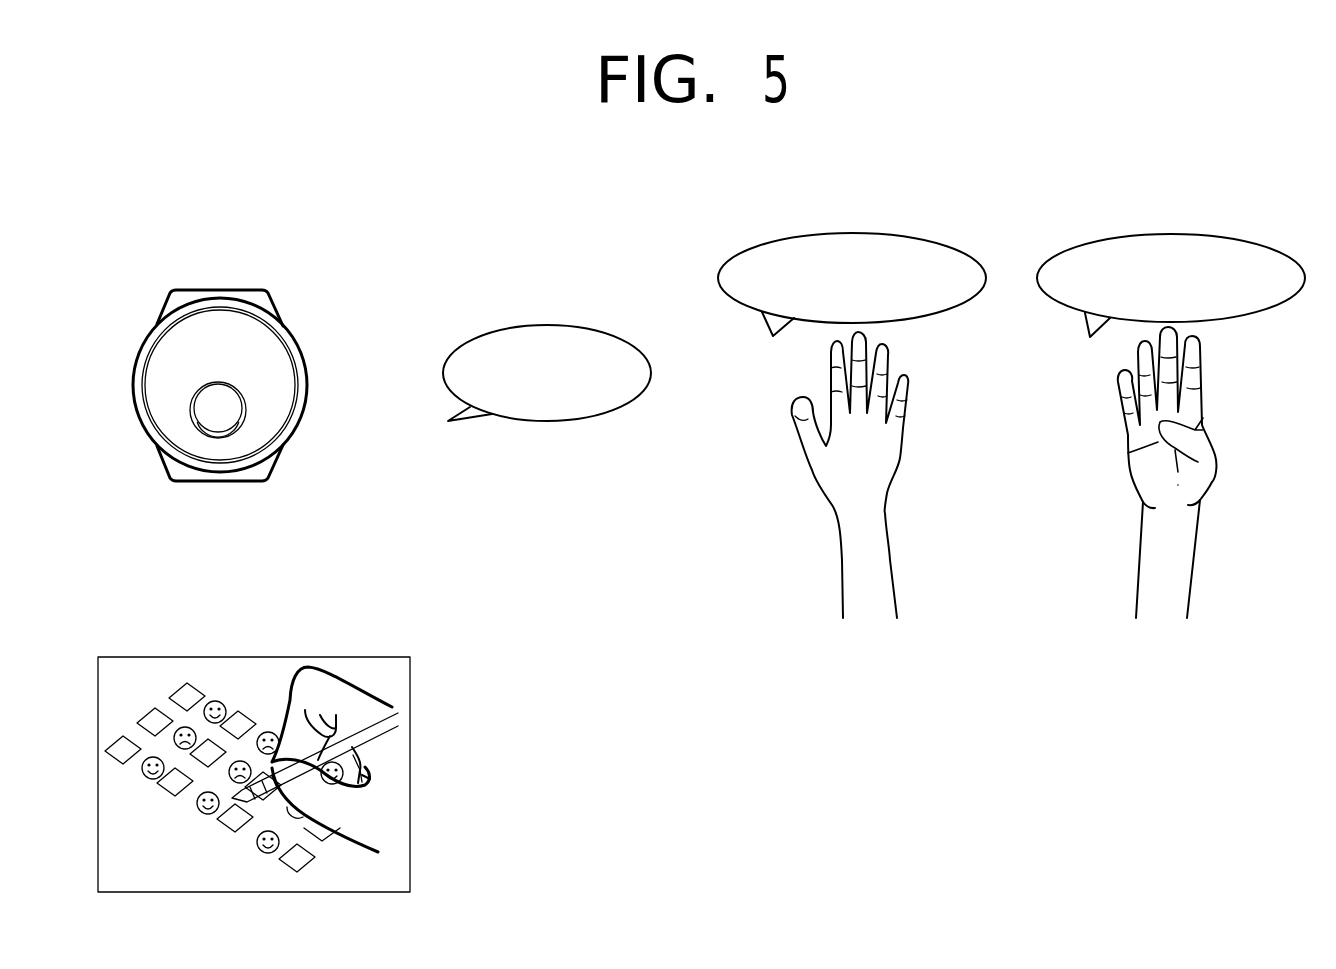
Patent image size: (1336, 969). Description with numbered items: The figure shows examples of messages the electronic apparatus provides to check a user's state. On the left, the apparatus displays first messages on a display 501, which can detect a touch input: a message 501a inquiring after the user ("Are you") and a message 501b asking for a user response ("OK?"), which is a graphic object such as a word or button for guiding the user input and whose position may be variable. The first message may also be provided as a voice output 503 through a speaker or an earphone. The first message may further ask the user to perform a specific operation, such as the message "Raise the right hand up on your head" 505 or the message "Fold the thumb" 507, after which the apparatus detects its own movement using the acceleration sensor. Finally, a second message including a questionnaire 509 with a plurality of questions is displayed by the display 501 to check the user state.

The display 501 is at (273, 302).
The message for inquiring after the user 501a is at (215, 327).
The graphic object for receiving a user input 501b is at (247, 413).
The voice output 503 is at (500, 324).
The message "Raise the right hand up on your head" 505 is at (852, 233).
The message "Fold the thumb" 507 is at (1155, 233).
The questionnaire 509 is at (241, 657).